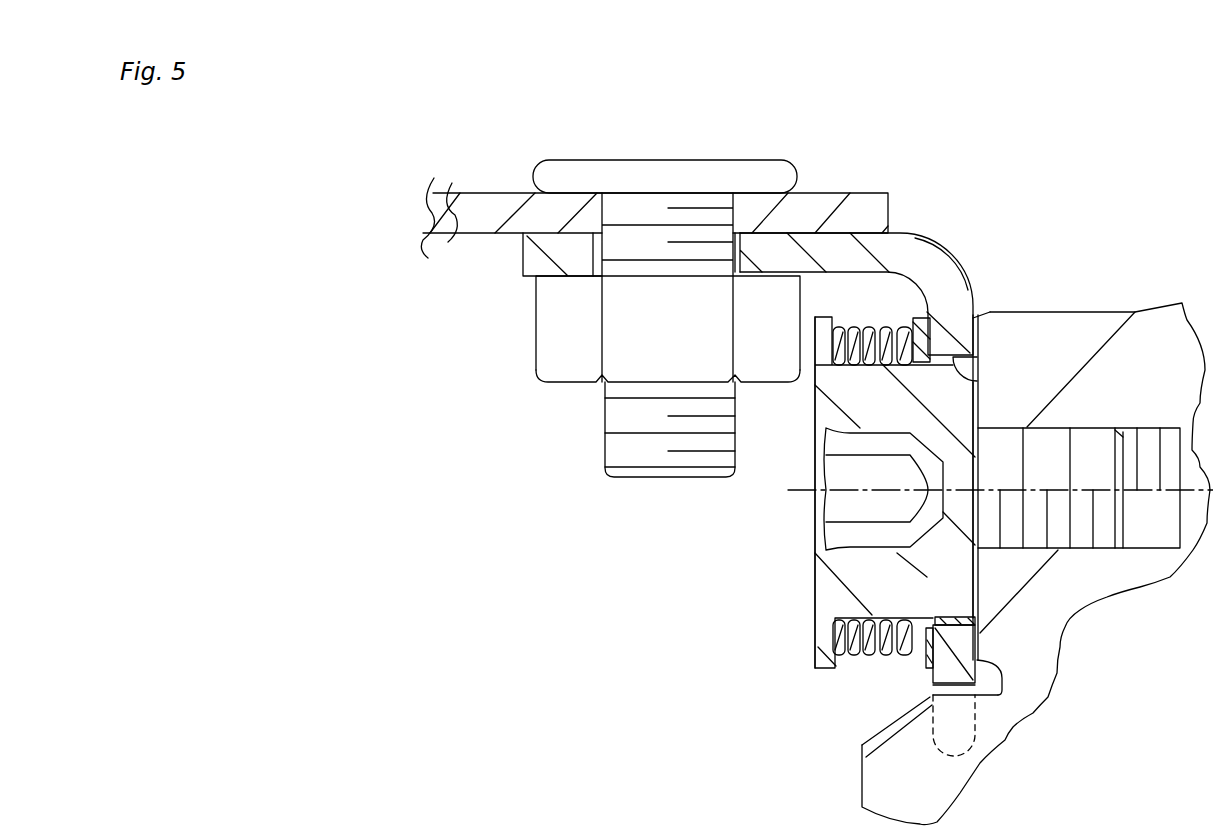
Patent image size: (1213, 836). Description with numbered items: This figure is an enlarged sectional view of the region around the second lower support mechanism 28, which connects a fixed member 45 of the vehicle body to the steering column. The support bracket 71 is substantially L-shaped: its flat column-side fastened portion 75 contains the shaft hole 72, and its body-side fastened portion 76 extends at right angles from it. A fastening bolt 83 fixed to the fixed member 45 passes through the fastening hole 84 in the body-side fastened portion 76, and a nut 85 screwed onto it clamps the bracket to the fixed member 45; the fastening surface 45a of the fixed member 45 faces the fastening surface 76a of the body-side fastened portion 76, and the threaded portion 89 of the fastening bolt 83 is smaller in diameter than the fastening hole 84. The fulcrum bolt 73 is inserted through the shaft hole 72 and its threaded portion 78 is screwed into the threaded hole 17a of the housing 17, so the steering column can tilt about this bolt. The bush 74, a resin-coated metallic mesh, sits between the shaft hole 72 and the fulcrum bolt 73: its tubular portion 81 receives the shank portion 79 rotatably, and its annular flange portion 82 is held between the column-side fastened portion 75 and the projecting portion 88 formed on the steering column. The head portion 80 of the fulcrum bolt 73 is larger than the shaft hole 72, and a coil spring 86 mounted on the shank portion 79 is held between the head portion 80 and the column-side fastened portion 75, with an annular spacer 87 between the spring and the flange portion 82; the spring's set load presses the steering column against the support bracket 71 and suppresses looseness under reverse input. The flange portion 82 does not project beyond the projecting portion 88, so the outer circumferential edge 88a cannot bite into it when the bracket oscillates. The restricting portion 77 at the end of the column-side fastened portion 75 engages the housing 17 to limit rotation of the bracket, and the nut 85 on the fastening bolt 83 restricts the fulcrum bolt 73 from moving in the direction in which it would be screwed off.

The housing 17 is at (1086, 318).
The threaded hole 17a is at (1147, 435).
The second lower support mechanism 28 is at (669, 660).
The fixed member 45 is at (488, 192).
The fastening surface 45a is at (451, 199).
The support bracket 71 is at (928, 240).
The shaft hole 72 is at (968, 375).
The fulcrum bolt 73 is at (815, 414).
The bush 74 is at (972, 320).
The column-side fastened portion 75 is at (945, 678).
The body-side fastened portion 76 is at (523, 262).
The fastening surface 76a is at (593, 260).
The restricting portion 77 is at (980, 765).
The threaded portion 78 is at (1082, 548).
The shank portion 79 is at (858, 655).
The head portion 80 is at (818, 590).
The tubular portion 81 is at (960, 616).
The flange portion 82 is at (980, 640).
The fastening bolt 83 is at (656, 176).
The fastening hole 84 is at (740, 275).
The nut 85 is at (567, 372).
The coil spring 86 is at (858, 330).
The annular spacer 87 is at (912, 322).
The projecting portion 88 is at (985, 562).
The outer circumferential edge 88a is at (1001, 694).
The threaded portion 89 is at (637, 462).